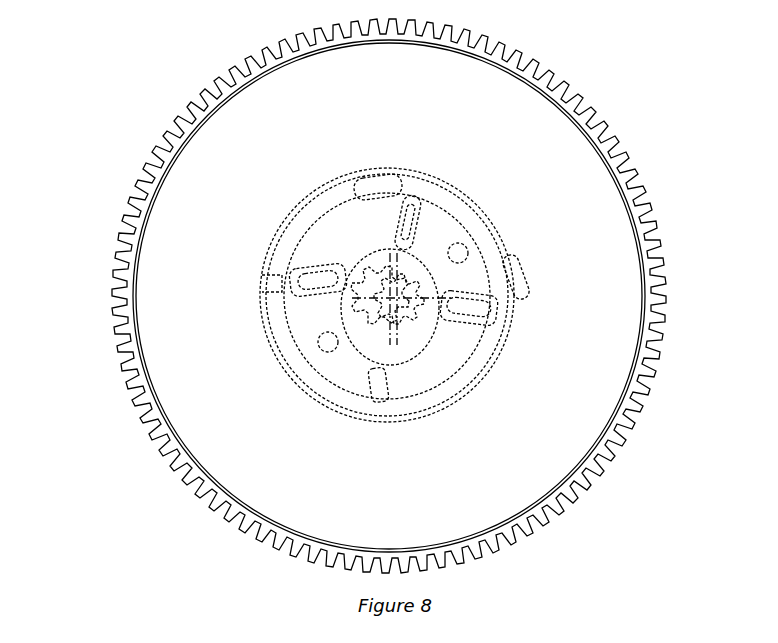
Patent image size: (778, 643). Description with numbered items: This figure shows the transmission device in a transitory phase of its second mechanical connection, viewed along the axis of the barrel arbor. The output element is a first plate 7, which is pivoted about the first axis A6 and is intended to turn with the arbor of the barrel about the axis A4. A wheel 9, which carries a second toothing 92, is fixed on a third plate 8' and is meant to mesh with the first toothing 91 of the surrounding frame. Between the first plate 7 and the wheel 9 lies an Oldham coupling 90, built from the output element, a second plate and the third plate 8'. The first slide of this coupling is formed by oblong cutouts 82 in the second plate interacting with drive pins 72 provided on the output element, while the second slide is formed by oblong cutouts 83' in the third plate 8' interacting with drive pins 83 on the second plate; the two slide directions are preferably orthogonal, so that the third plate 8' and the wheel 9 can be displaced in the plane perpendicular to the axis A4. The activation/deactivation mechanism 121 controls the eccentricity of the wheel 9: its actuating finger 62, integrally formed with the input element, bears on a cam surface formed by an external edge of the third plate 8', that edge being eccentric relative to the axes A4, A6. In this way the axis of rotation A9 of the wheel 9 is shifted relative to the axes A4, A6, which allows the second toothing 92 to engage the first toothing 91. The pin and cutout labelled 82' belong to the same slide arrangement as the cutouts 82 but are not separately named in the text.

The Oldham coupling 90 is at (473, 232).
The third plate 8' is at (387, 286).
The first plate 7 is at (282, 275).
The wheel 9 is at (403, 293).
The first toothing 91 is at (357, 272).
The second toothing 92 is at (370, 291).
The finger 62 is at (377, 187).
The slot 82' is at (426, 182).
The drive pins 83 is at (380, 435).
The oblong cutouts 83' is at (380, 435).
The drive pins 72 is at (511, 252).
The oblong cutouts 82 is at (511, 252).
The activation/deactivation mechanism 121 is at (405, 128).
The axis A4 is at (307, 375).
The first axis A6 is at (387, 302).
The axis of rotation A9 is at (402, 300).